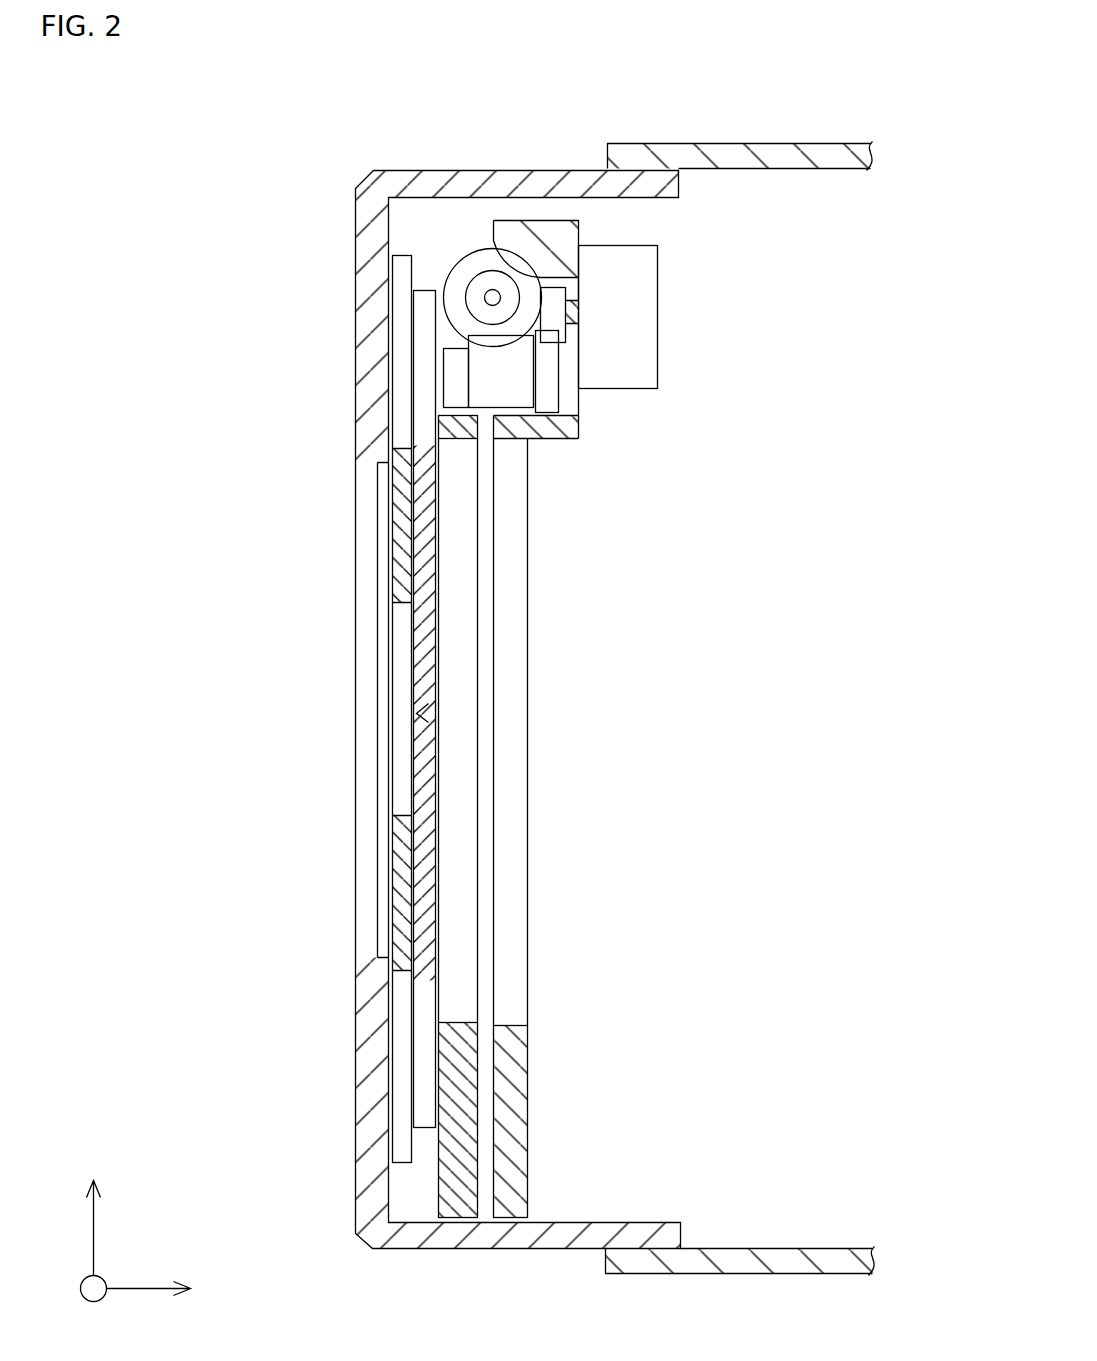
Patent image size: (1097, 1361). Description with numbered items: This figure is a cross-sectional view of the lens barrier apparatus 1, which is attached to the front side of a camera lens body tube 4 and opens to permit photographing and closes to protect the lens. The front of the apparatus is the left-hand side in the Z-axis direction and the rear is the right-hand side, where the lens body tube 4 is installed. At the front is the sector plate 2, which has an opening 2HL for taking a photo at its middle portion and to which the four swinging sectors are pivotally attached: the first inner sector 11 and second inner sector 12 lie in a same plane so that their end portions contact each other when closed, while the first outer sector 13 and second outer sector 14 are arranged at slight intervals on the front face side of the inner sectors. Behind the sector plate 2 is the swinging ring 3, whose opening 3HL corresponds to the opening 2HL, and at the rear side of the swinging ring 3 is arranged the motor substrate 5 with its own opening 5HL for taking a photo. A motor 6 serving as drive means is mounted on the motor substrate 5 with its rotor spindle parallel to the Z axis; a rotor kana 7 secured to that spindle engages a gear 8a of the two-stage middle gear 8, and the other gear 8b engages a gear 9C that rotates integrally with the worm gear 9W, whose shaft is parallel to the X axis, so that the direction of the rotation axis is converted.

The lens barrier apparatus 1 is at (322, 233).
The sector plate 2 is at (373, 1105).
The opening 2HL is at (370, 960).
The swinging ring 3 is at (457, 1213).
The opening 3HL is at (443, 1017).
The lens body tube 4 is at (729, 153).
The motor substrate 5 is at (518, 1142).
The opening 5HL is at (515, 1025).
The motor 6 is at (637, 288).
The rotor kana 7 is at (560, 327).
The middle gear 8 is at (650, 487).
The gear 8a is at (547, 400).
The gear 8b is at (507, 397).
The gear 9C is at (482, 260).
The worm gear 9W is at (493, 298).
The first inner sector 11 is at (417, 783).
The second inner sector 12 is at (423, 638).
The first outer sector 13 is at (390, 875).
The second outer sector 14 is at (393, 502).